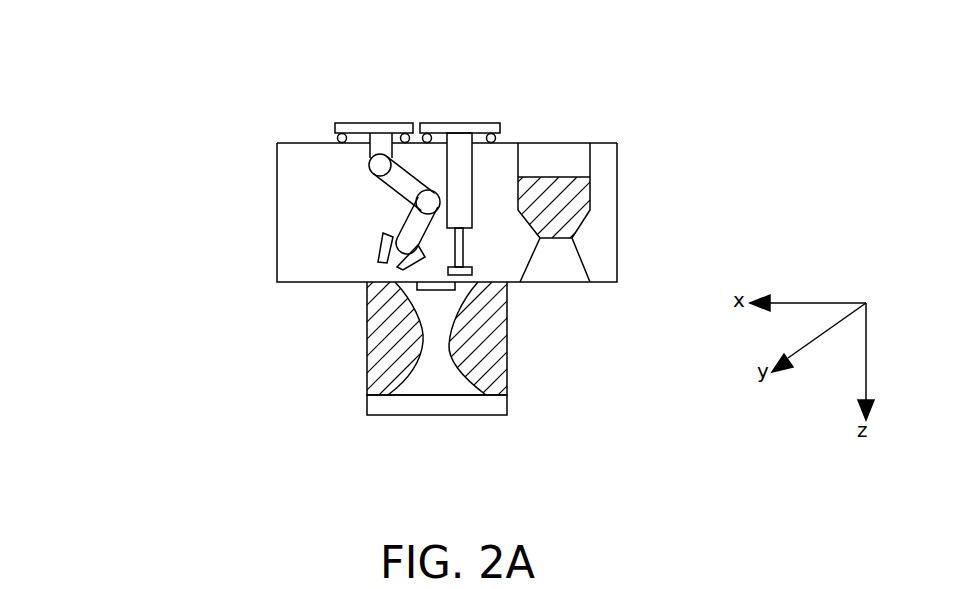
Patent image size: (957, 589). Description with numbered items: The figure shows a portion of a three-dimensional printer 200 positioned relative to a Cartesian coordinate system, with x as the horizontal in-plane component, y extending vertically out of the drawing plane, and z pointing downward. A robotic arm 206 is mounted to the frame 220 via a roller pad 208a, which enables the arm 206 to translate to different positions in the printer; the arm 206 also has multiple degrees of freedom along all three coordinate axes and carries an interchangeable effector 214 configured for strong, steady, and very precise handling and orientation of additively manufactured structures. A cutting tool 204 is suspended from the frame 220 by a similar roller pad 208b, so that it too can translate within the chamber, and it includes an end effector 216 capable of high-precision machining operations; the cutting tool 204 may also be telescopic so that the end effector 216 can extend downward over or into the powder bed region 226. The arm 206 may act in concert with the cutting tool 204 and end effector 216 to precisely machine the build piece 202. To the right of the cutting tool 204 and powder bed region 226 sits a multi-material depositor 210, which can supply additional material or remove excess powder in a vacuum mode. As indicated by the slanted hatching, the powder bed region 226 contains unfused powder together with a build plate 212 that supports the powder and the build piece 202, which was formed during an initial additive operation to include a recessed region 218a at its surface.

The 3-D printer 200 is at (199, 55).
The build piece 202 is at (423, 378).
The cutting tool 204 is at (458, 157).
The robotic arm 206 is at (388, 186).
The roller pad 208a is at (322, 124).
The roller pad 208b is at (510, 119).
The multi-material depositor 210 is at (563, 248).
The build plate 212 is at (507, 398).
The interchangeable effector 214 is at (380, 262).
The end effector 216 is at (470, 276).
The recessed region 218a is at (433, 294).
The frame 220 is at (598, 143).
The powder bed region 226 is at (392, 370).